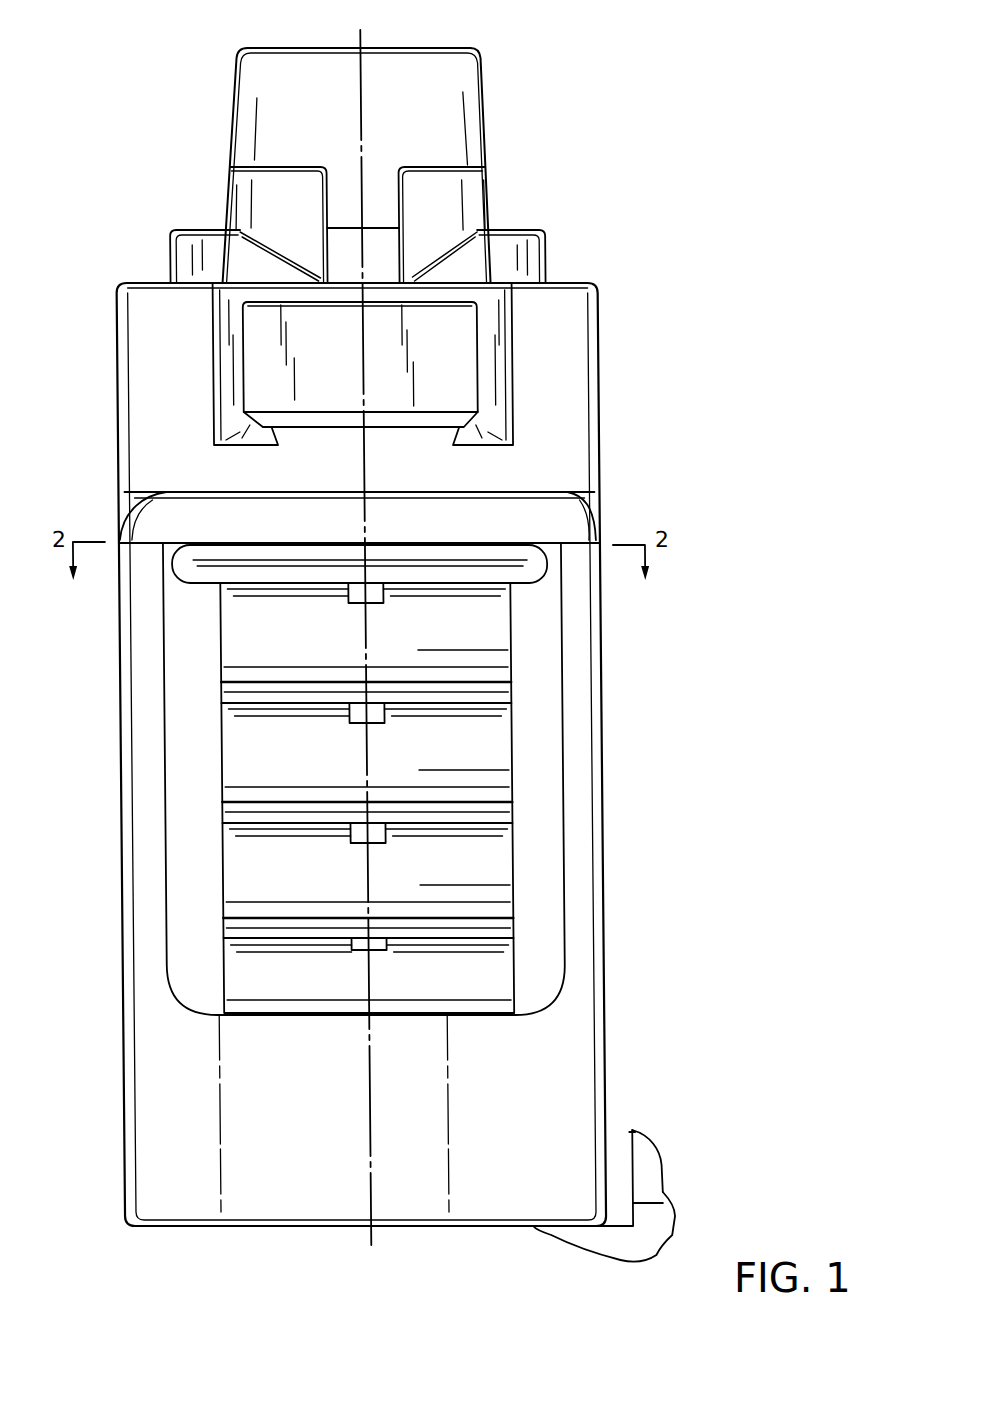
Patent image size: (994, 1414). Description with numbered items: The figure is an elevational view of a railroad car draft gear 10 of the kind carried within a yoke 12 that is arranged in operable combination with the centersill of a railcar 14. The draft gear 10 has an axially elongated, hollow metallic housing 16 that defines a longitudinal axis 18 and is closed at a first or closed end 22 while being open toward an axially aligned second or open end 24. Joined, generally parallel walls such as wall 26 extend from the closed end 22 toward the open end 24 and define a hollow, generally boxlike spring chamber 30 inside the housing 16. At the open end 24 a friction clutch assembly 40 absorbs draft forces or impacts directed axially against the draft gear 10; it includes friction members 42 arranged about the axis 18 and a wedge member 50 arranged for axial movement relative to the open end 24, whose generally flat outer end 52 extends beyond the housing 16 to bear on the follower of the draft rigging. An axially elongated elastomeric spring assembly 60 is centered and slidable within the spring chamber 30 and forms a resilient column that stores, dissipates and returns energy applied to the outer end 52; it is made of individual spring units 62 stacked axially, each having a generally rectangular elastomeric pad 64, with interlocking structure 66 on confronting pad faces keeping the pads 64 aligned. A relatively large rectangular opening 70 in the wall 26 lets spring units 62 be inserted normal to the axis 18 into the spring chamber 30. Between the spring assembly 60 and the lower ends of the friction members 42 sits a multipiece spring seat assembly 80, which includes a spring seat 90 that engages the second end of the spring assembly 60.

The railroad car draft gear 10 is at (656, 272).
The yoke 12 is at (637, 1163).
The railcar 14 is at (643, 1253).
The housing 16 is at (138, 1058).
The longitudinal axis 18 is at (363, 1140).
The closed end 22 is at (276, 1207).
The open end 24 is at (578, 330).
The wall 26 is at (506, 1162).
The spring chamber 30 is at (553, 812).
The friction clutch assembly 40 is at (518, 200).
The friction members 42 is at (188, 255).
The wedge member 50 is at (247, 135).
The outer end of the wedge member 52 is at (427, 48).
The elastomeric spring assembly 60 is at (540, 770).
The spring units 62 is at (316, 652).
The elastomeric pad 64 is at (232, 645).
The interlocking structure 66 is at (367, 603).
The opening 70 is at (172, 902).
The multipiece spring seat assembly 80 is at (537, 608).
The spring seat 90 is at (181, 583).